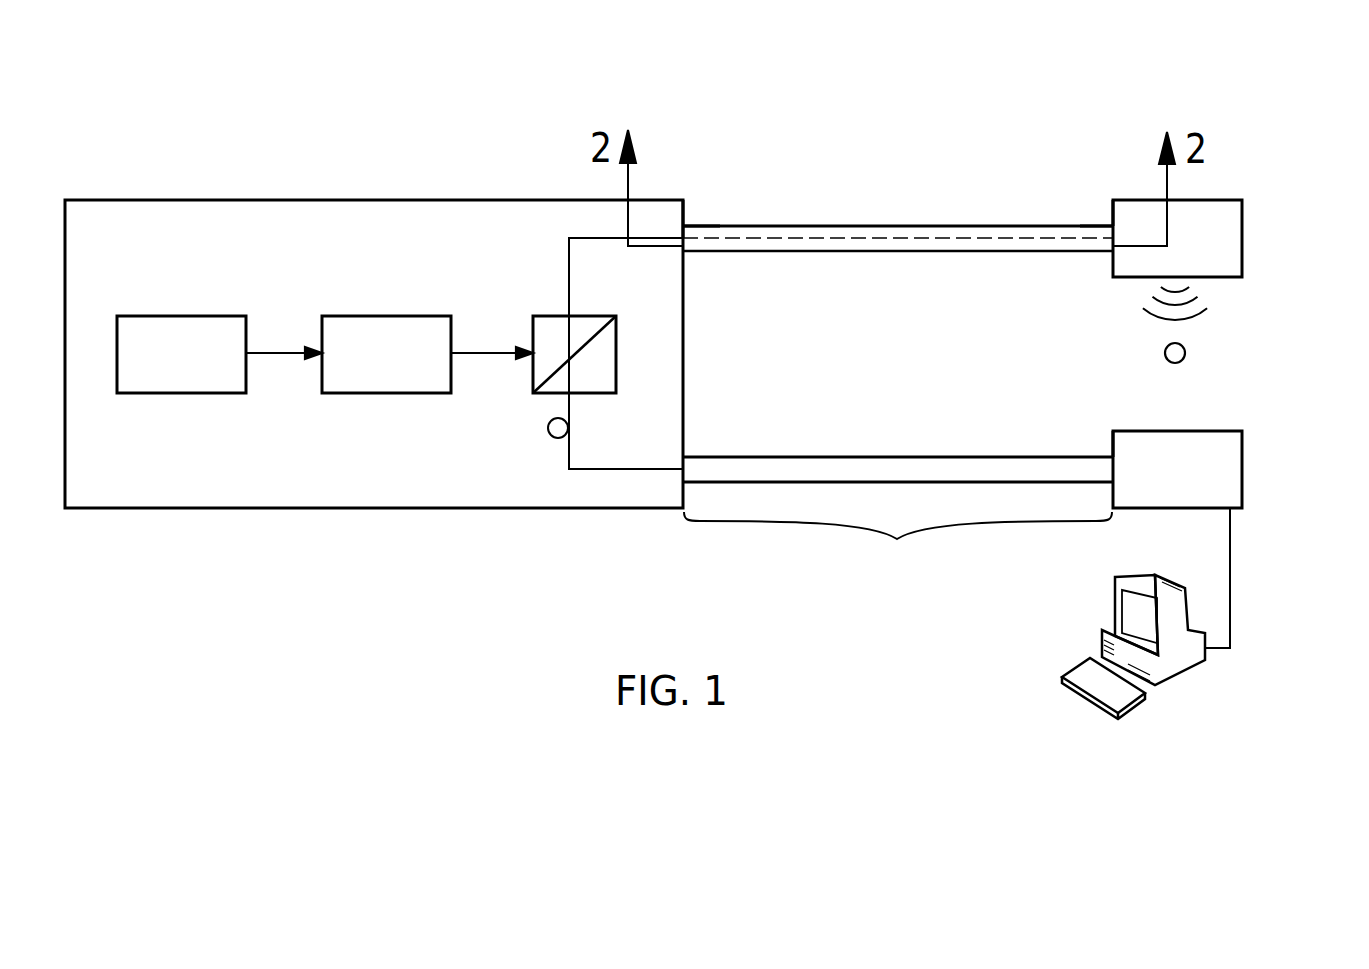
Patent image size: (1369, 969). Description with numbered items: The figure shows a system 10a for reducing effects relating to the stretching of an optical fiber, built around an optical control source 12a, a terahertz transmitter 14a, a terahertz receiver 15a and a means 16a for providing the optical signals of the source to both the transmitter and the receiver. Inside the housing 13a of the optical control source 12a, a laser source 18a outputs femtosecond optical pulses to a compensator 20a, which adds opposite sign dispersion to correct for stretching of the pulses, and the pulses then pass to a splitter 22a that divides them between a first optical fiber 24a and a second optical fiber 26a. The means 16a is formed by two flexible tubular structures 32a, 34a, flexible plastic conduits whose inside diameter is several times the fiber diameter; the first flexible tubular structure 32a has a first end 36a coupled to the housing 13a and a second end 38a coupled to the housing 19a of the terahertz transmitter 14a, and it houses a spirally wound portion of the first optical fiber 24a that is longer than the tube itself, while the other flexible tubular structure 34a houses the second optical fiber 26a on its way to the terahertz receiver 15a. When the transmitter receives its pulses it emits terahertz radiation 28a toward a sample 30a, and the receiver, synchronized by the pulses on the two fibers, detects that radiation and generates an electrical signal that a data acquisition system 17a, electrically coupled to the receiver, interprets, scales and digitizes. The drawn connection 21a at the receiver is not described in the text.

The system 10a is at (968, 88).
The optical control source 12a is at (456, 200).
The housing of the optical control unit 13a is at (686, 210).
The terahertz transmitter 14a is at (1226, 200).
The terahertz receiver 15a is at (1177, 431).
The means for providing optical signals 16a is at (898, 542).
The data acquisition system 17a is at (1176, 588).
The laser source 18a is at (151, 316).
The housing of the terahertz transmitter 19a is at (1110, 208).
The compensator 20a is at (352, 316).
The connection 21a is at (1113, 440).
The splitter 22a is at (530, 373).
The first optical fiber 24a is at (583, 238).
The second optical fiber 26a is at (600, 470).
The terahertz radiation 28a is at (1220, 306).
The sample 30a is at (1181, 362).
The flexible tubular structure 32a is at (882, 226).
The flexible tubular structure 34a is at (880, 456).
The first end 36a is at (696, 226).
The second end 38a is at (1106, 226).